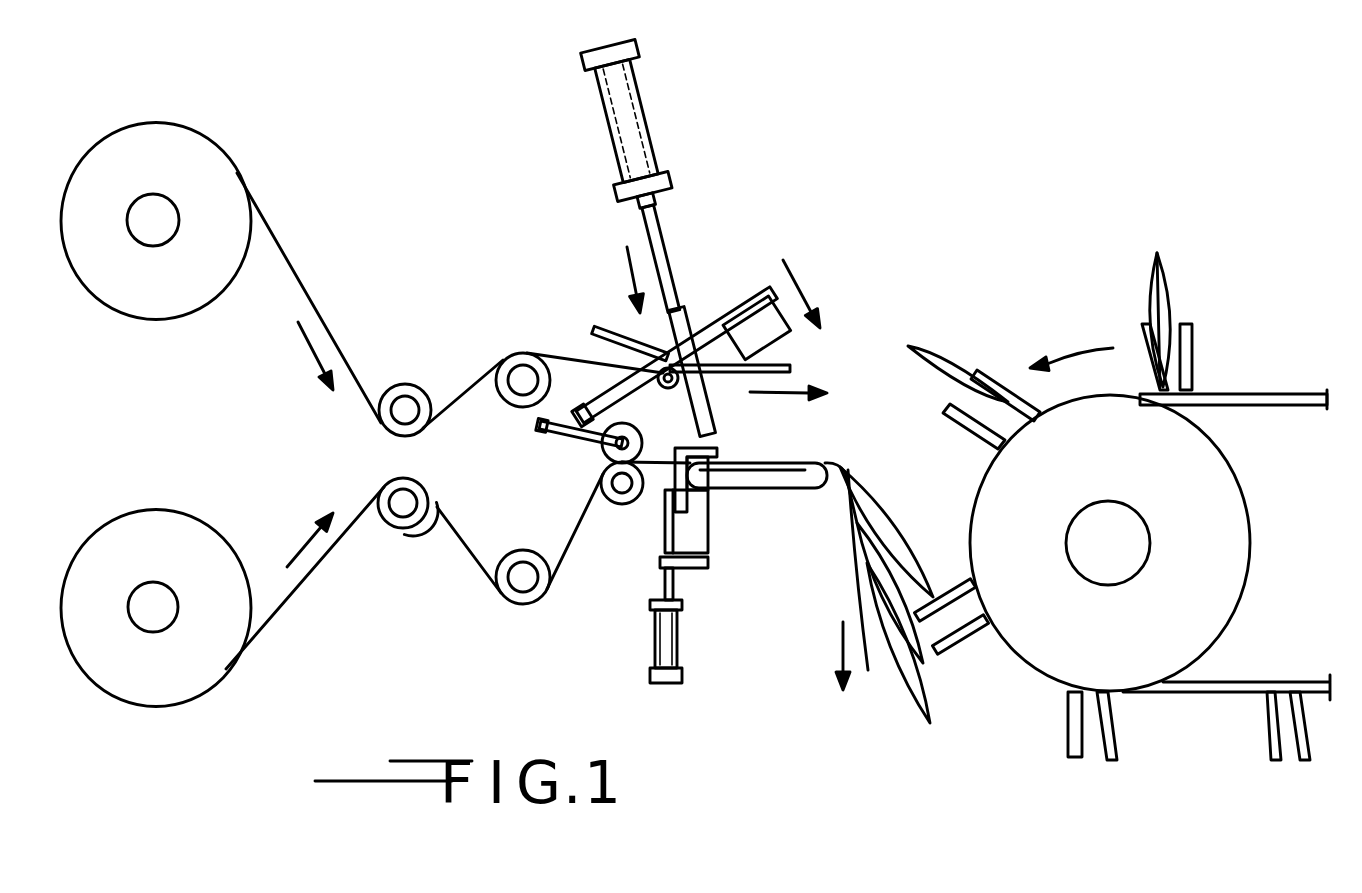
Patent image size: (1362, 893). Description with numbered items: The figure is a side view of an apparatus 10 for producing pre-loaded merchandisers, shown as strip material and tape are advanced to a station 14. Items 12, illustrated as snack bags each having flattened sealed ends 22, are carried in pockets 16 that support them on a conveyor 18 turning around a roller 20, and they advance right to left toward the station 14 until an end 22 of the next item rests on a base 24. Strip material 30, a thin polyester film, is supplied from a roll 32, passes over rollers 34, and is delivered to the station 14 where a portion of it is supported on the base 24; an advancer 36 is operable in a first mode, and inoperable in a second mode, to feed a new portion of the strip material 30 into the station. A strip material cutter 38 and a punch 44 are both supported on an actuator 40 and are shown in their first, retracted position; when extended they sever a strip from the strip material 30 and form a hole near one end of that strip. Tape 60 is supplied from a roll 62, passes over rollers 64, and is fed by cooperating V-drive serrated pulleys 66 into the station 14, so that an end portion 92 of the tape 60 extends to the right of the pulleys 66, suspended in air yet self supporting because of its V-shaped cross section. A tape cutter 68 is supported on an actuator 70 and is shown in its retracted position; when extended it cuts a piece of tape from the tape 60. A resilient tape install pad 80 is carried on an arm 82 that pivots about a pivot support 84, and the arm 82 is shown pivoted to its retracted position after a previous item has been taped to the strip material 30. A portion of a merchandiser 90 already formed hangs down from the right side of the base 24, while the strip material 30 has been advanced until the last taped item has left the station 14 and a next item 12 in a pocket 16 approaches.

The apparatus 10 is at (905, 200).
The items 12 is at (1153, 295).
The station 14 is at (794, 586).
The pockets 16 is at (1091, 773).
The conveyor 18 is at (1267, 405).
The roller 20 is at (1252, 540).
The flattened sealed ends 22 is at (1157, 253).
The base 24 is at (790, 490).
The strip material 30 is at (460, 543).
The roll 32 is at (186, 513).
The rollers 34 is at (510, 553).
The advancer 36 is at (560, 458).
The strip material cutter 38 is at (667, 528).
The actuator 40 is at (653, 643).
The punch 44 is at (712, 520).
The tape 60 is at (300, 275).
The roll 62 is at (210, 130).
The rollers 64 is at (403, 384).
The V-drive serrated pulleys 66 is at (668, 389).
The tape cutter 68 is at (670, 272).
The actuator 70 is at (640, 93).
The tape install pad 80 is at (780, 363).
The arm 82 is at (703, 330).
The pivot support 84 is at (580, 408).
The merchandiser 90 is at (900, 725).
The end portion of the tape 92 is at (783, 367).